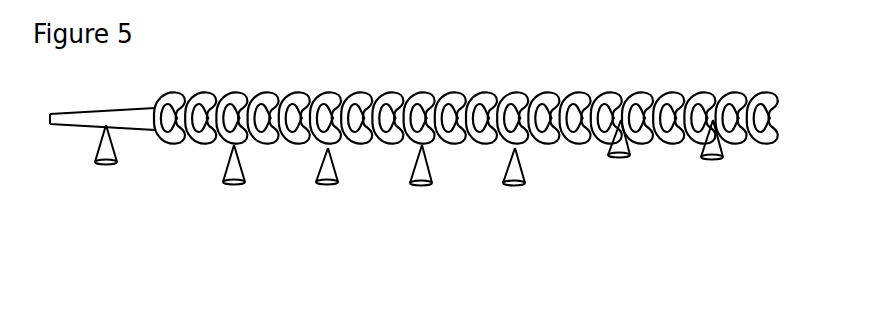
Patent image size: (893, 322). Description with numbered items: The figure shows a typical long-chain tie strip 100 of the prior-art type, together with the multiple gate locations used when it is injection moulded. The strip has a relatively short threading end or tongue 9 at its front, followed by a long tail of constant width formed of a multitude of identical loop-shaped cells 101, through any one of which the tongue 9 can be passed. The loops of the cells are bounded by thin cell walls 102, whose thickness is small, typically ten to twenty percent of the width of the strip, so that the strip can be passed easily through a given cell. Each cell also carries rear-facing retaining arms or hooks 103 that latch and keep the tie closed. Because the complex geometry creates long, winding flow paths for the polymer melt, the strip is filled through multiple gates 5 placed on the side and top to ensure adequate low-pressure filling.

The gates 5 is at (708, 152).
The tongue 9 is at (88, 108).
The tie strip 100 is at (466, 85).
The cells 101 is at (262, 88).
The cell walls 102 is at (382, 92).
The retaining arms or hooks 103 is at (553, 93).